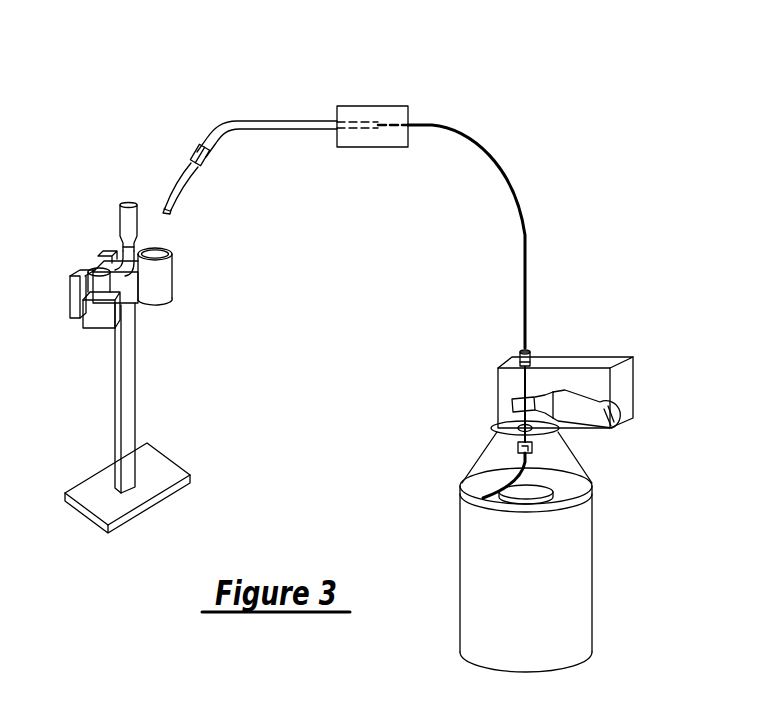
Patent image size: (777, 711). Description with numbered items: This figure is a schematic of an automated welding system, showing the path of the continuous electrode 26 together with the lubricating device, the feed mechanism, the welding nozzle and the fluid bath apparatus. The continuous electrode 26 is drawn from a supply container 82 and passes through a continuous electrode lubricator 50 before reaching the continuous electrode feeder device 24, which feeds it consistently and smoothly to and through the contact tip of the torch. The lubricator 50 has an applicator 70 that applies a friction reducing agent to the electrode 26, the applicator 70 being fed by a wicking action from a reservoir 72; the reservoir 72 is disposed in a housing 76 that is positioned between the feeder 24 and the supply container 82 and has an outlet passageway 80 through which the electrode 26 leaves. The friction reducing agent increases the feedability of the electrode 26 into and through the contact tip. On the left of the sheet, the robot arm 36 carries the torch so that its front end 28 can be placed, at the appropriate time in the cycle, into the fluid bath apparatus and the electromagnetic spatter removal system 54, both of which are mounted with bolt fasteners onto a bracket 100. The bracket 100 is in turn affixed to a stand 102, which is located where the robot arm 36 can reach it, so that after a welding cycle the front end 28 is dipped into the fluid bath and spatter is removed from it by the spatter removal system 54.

The continuous electrode feeder device 24 is at (371, 105).
The continuous electrode 26 is at (464, 131).
The front end 28 is at (160, 175).
The robot arm 36 is at (246, 115).
The continuous electrode lubricator 50 is at (551, 391).
The electromagnetic spatter removal system 54 is at (91, 294).
The applicator 70 is at (510, 399).
The reservoir 72 is at (582, 418).
The housing 76 is at (627, 389).
The outlet passageway 80 is at (530, 362).
The supply container 82 is at (535, 614).
The bracket 100 is at (83, 268).
The stand 102 is at (136, 408).